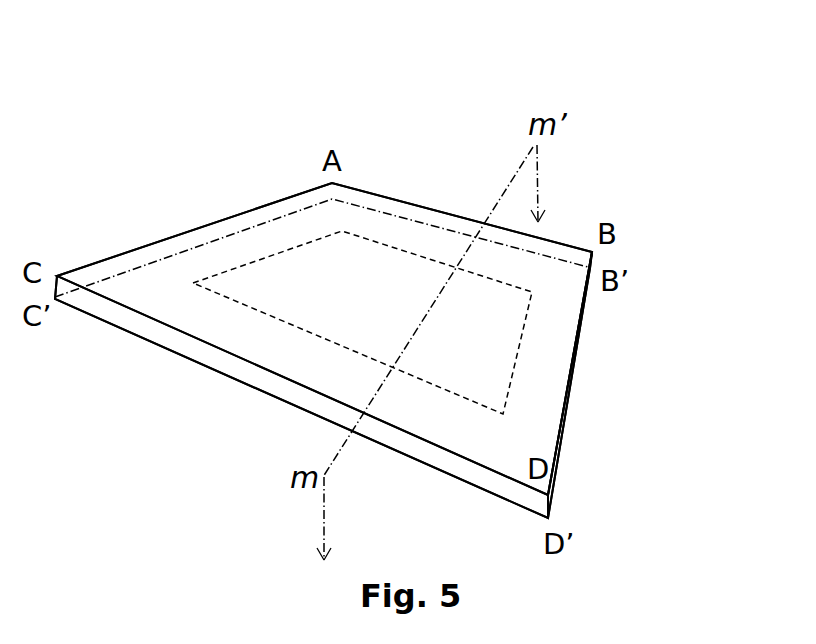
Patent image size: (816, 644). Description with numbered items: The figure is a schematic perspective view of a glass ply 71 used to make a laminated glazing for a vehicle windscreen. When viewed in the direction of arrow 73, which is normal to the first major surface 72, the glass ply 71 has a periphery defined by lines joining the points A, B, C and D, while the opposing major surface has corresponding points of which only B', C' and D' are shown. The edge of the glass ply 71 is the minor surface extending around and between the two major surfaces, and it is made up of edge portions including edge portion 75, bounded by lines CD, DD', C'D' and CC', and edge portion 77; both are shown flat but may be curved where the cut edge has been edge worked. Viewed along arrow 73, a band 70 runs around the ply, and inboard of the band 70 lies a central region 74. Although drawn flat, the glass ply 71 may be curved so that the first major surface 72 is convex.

The band 70 is at (205, 252).
The glass ply 71 is at (608, 188).
The first major surface 72 is at (542, 347).
The arrow 73 is at (416, 168).
The central region 74 is at (315, 270).
The edge portion 75 is at (227, 362).
The edge portion 77 is at (562, 445).